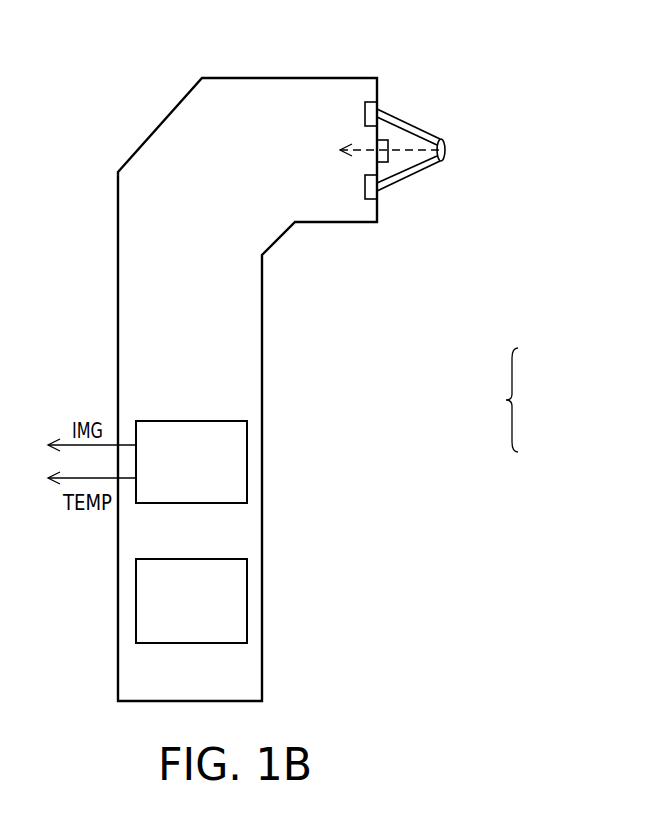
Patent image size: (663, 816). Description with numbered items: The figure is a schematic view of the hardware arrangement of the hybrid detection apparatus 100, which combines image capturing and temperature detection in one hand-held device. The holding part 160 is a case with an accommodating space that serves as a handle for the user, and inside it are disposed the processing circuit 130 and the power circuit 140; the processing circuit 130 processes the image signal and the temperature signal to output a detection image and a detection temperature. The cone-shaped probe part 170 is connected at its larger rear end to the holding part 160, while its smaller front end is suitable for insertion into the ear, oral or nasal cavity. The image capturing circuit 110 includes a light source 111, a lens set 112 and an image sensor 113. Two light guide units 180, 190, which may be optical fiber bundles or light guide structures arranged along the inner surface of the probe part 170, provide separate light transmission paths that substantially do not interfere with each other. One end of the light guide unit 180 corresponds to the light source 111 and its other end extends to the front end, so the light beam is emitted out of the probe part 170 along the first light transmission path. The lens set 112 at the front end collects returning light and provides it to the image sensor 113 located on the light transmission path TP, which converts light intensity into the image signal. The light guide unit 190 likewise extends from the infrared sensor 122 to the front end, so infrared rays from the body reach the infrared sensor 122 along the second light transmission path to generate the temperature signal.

The hybrid detection apparatus 100 is at (498, 711).
The image capturing circuit 110 is at (507, 399).
The light source 111 is at (372, 196).
The lens set 112 is at (441, 145).
The image sensor 113 is at (363, 154).
The infrared sensor 122 is at (369, 110).
The processing circuit 130 is at (247, 462).
The power circuit 140 is at (247, 600).
The holding part 160 is at (260, 115).
The probe part 170 is at (392, 133).
The light guide unit 180 is at (418, 168).
The light guide unit 190 is at (415, 128).
The light transmission path TP is at (418, 150).